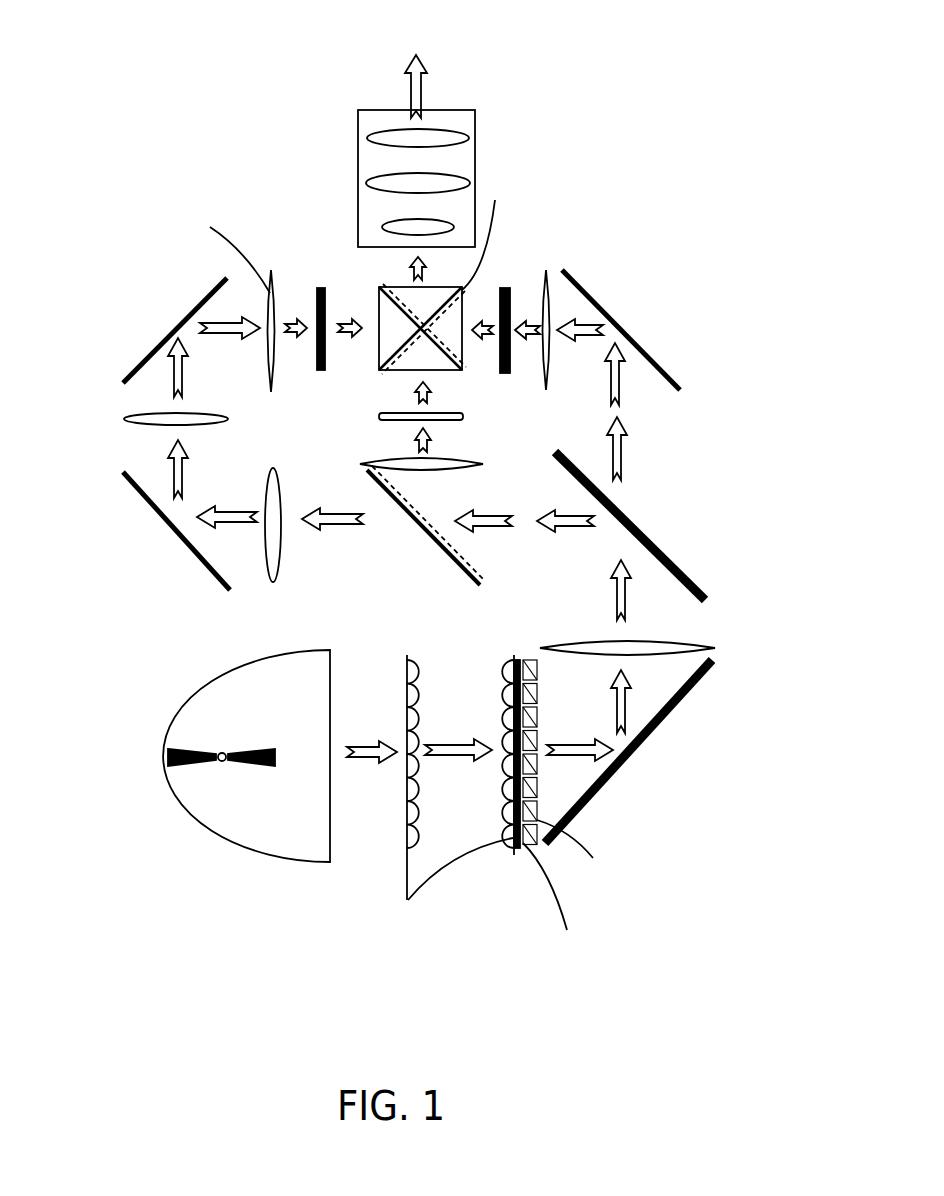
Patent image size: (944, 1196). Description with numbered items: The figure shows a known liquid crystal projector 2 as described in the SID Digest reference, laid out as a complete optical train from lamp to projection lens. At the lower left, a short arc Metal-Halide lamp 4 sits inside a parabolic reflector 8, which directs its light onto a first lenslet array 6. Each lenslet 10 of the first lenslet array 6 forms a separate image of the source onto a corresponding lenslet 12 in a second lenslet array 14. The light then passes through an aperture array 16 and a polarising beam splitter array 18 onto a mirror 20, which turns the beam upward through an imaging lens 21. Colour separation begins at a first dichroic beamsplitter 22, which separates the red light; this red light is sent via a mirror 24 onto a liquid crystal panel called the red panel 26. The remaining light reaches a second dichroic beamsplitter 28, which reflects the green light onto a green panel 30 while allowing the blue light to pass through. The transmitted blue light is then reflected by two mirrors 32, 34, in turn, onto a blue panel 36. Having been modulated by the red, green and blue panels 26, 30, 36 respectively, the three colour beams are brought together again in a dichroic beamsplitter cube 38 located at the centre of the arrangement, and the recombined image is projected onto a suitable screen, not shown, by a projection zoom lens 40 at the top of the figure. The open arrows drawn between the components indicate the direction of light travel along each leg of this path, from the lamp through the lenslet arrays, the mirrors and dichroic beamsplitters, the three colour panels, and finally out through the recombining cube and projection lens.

The liquid crystal projector 2 is at (150, 83).
The short arc Metal-Halide lamp 4 is at (220, 753).
The first lenslet array 6 is at (405, 667).
The parabolic reflector 8 is at (220, 673).
The lenslet 10 is at (408, 793).
The lenslet 12 is at (508, 787).
The second lenslet array 14 is at (510, 672).
The aperture array 16 is at (515, 660).
The polarising beam splitter array 18 is at (530, 660).
The mirror 20 is at (735, 762).
The imaging lens 21 is at (713, 650).
The first dichroic beamsplitter 22 is at (692, 576).
The mirror 24 is at (645, 350).
The red panel 26 is at (512, 294).
The second dichroic beamsplitter 28 is at (378, 488).
The green panel 30 is at (446, 412).
The mirror 32 is at (183, 540).
The mirror 34 is at (188, 322).
The blue panel 36 is at (325, 313).
The dichroic beamsplitter cube 38 is at (378, 292).
The projection zoom lens 40 is at (478, 110).